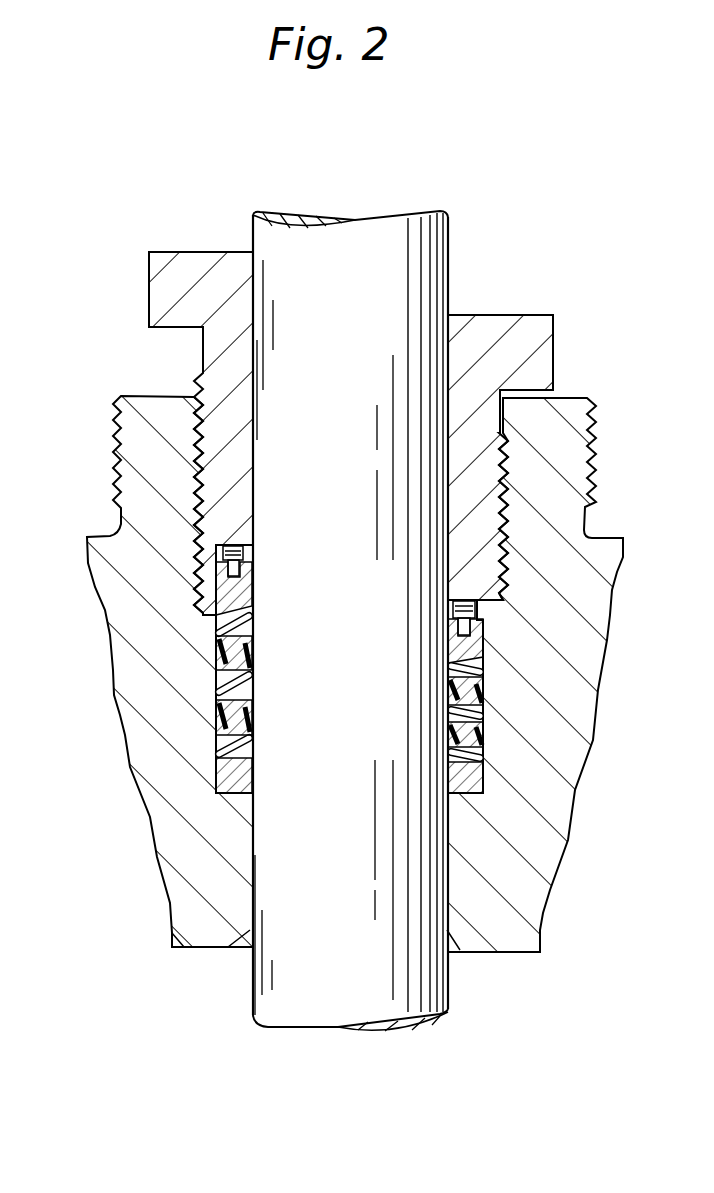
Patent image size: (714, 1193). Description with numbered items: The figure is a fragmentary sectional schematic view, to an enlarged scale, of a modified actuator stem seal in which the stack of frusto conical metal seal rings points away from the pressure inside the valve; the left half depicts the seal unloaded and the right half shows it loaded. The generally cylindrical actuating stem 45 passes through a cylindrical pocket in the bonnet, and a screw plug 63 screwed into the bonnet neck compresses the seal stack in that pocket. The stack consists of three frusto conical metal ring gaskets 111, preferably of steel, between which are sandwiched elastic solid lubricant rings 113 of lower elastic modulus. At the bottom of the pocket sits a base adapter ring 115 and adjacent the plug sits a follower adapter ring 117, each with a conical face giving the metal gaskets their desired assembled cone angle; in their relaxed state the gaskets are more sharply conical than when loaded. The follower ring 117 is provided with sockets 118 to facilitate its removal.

The actuating stem 45 is at (368, 348).
The screw plug 63 is at (250, 500).
The sockets 118 is at (246, 556).
The follower adapter ring 117 is at (240, 593).
The frusto conical metal ring gaskets 111 is at (248, 627).
The elastic solid lubricant rings 113 is at (218, 724).
The base adapter ring 115 is at (245, 779).